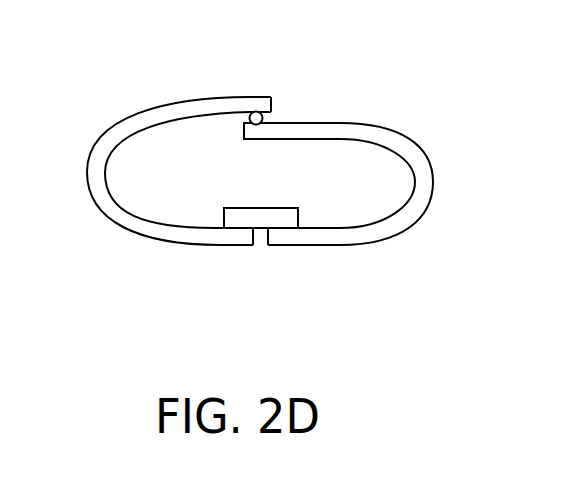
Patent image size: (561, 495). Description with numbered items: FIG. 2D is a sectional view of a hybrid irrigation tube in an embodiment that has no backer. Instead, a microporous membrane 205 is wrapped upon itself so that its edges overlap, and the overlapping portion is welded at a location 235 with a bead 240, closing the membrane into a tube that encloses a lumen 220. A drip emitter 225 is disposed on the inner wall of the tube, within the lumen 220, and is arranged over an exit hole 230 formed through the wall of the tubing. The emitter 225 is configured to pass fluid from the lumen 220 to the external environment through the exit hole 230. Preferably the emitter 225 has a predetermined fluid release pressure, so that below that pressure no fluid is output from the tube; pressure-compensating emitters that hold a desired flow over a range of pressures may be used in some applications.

The microporous membrane 205 is at (102, 193).
The lumen 220 is at (172, 162).
The drip emitter 225 is at (275, 218).
The exit hole 230 is at (263, 253).
The weld location 235 is at (255, 76).
The bead 240 is at (263, 117).